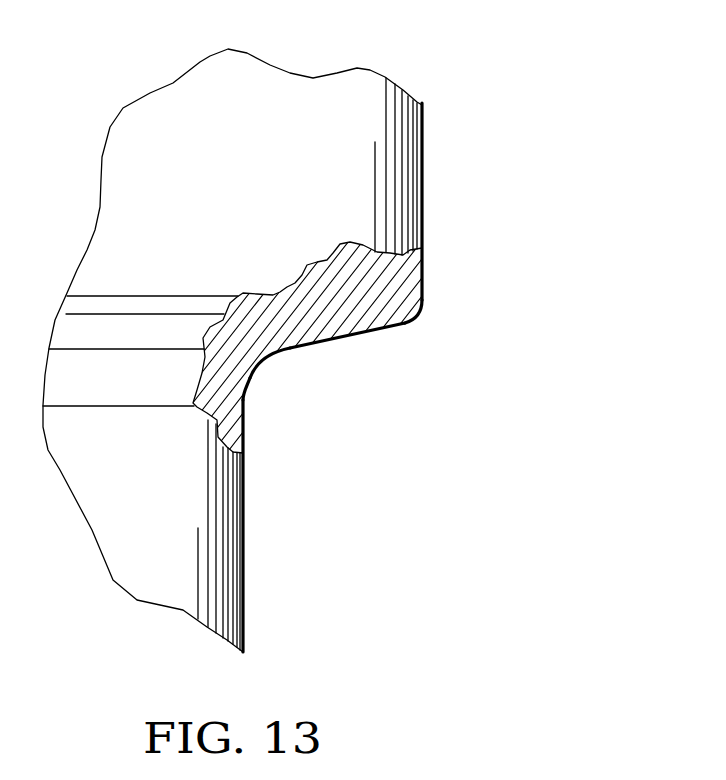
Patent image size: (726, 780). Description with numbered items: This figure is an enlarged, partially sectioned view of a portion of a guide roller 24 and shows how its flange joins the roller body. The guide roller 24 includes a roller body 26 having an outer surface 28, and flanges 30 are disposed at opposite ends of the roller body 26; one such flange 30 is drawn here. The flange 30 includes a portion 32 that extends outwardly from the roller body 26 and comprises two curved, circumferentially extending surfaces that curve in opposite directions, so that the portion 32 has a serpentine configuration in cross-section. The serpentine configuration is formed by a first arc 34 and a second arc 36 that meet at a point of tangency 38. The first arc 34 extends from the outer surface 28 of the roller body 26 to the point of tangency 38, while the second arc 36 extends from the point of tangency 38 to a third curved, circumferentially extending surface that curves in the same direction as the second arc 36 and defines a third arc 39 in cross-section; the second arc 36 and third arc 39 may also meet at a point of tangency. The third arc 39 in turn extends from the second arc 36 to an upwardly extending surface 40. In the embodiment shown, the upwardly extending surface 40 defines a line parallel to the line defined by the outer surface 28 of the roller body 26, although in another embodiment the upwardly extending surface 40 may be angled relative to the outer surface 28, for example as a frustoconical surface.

The guide roller 24 is at (468, 105).
The roller body 26 is at (246, 602).
The outer surface 28 is at (252, 569).
The flange 30 is at (423, 170).
The portion 32 is at (297, 385).
The first arc 34 is at (265, 386).
The second arc 36 is at (372, 343).
The point of tangency 38 is at (291, 351).
The third arc 39 is at (430, 320).
The upwardly extending surface 40 is at (430, 217).